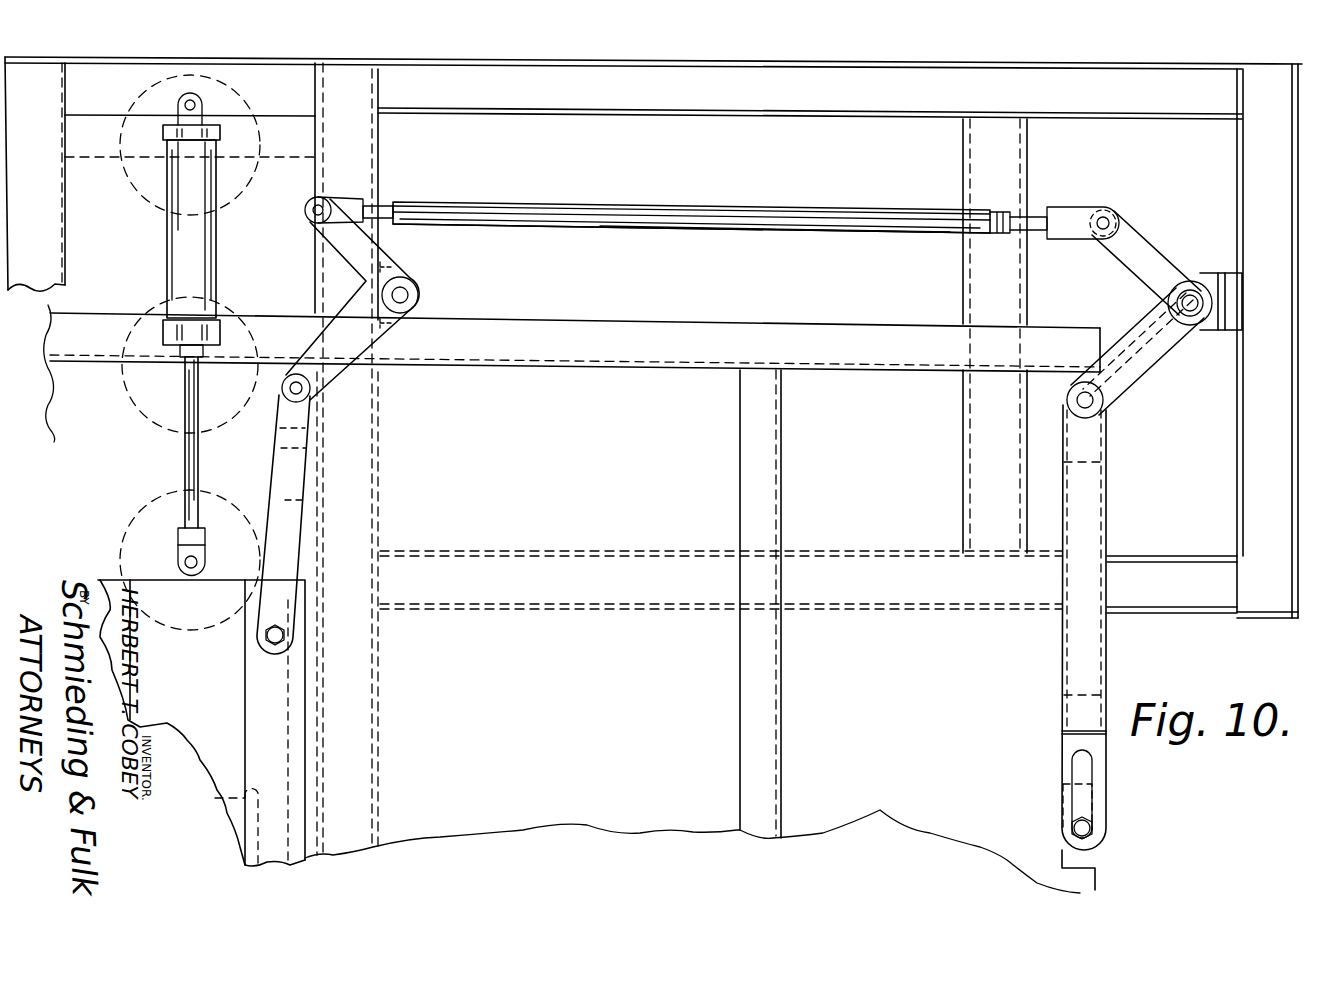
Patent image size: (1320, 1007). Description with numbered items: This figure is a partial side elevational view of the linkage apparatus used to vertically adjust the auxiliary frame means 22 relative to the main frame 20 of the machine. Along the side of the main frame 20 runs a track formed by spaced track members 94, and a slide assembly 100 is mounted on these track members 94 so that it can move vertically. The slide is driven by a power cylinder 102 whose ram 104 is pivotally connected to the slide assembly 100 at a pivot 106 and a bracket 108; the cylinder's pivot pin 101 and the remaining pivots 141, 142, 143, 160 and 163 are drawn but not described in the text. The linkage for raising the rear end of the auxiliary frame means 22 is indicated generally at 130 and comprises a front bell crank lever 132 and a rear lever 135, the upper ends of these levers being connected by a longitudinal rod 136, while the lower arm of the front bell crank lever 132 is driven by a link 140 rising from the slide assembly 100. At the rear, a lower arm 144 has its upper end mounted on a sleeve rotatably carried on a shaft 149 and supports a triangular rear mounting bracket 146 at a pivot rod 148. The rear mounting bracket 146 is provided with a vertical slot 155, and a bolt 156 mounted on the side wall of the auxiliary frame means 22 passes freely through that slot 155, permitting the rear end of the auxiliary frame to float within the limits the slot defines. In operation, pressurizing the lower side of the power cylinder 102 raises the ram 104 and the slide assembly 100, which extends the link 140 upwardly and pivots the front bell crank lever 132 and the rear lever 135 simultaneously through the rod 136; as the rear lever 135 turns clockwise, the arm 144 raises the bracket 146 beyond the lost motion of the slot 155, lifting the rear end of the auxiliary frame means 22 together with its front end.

The main frame 20 is at (316, 285).
The auxiliary frame means 22 is at (752, 330).
The track members 94 is at (272, 510).
The slide assembly 100 is at (132, 572).
The pivot pin 101 is at (196, 100).
The power cylinder 102 is at (180, 236).
The ram 104 is at (188, 395).
The pivot 106 is at (175, 552).
The bracket 108 is at (184, 560).
The linkage 130 is at (541, 206).
The front bell crank lever 132 is at (360, 236).
The rear lever 135 is at (1125, 225).
The longitudinal rod 136 is at (684, 206).
The link 140 is at (300, 470).
The pivot pin 141 is at (315, 392).
The pivot pin 142 is at (285, 648).
The bell crank 143 is at (422, 290).
The lower arm 144 is at (1148, 355).
The rear mounting bracket 146 is at (1092, 640).
The pivot rod 148 is at (1105, 405).
The shaft 149 is at (1190, 295).
The slot 155 is at (1075, 765).
The bolt 156 is at (1072, 828).
The bracket 160 is at (1232, 275).
The pivot pin 163 is at (1100, 207).